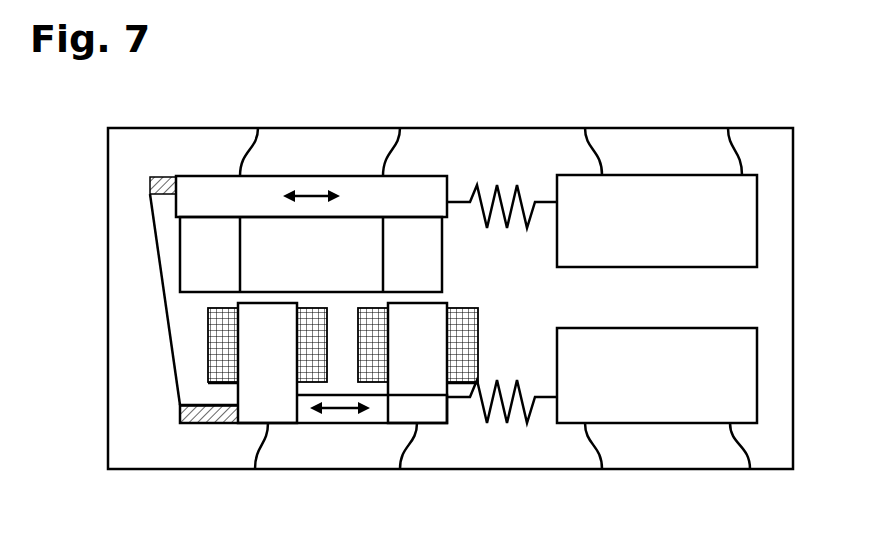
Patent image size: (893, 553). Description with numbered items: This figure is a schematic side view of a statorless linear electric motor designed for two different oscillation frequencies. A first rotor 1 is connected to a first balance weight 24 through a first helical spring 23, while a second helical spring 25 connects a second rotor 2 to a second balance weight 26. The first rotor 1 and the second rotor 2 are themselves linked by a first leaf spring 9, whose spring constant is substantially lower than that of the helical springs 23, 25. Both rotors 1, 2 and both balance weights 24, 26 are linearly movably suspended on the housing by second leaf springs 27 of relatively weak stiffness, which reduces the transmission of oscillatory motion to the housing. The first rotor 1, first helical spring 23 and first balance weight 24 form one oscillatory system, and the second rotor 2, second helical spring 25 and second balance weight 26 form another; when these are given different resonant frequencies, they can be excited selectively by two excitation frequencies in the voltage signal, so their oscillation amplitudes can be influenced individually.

The first rotor 1 is at (338, 428).
The second rotor 2 is at (316, 172).
The first leaf spring 9 is at (170, 338).
The first helical spring 23 is at (497, 425).
The first balance weight 24 is at (742, 400).
The second helical spring 25 is at (515, 185).
The second balance weight 26 is at (742, 245).
The second leaf springs 27 is at (405, 142).